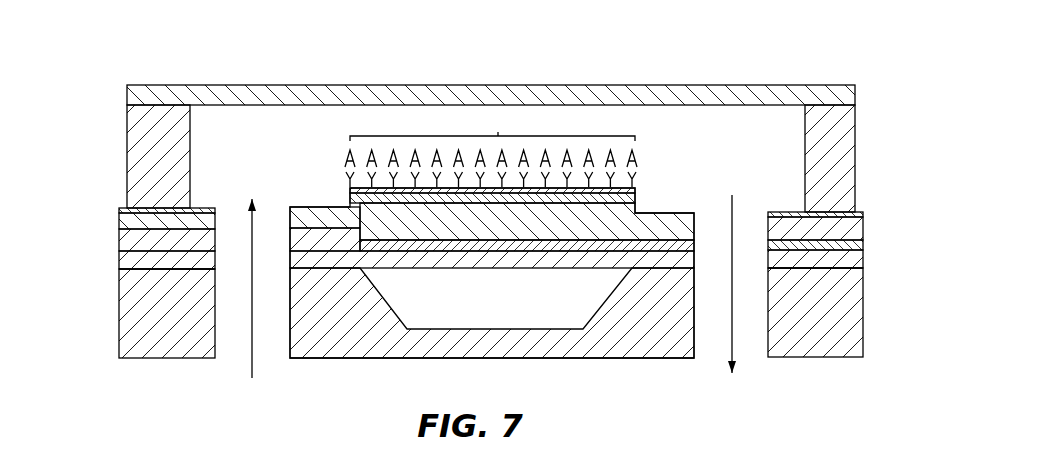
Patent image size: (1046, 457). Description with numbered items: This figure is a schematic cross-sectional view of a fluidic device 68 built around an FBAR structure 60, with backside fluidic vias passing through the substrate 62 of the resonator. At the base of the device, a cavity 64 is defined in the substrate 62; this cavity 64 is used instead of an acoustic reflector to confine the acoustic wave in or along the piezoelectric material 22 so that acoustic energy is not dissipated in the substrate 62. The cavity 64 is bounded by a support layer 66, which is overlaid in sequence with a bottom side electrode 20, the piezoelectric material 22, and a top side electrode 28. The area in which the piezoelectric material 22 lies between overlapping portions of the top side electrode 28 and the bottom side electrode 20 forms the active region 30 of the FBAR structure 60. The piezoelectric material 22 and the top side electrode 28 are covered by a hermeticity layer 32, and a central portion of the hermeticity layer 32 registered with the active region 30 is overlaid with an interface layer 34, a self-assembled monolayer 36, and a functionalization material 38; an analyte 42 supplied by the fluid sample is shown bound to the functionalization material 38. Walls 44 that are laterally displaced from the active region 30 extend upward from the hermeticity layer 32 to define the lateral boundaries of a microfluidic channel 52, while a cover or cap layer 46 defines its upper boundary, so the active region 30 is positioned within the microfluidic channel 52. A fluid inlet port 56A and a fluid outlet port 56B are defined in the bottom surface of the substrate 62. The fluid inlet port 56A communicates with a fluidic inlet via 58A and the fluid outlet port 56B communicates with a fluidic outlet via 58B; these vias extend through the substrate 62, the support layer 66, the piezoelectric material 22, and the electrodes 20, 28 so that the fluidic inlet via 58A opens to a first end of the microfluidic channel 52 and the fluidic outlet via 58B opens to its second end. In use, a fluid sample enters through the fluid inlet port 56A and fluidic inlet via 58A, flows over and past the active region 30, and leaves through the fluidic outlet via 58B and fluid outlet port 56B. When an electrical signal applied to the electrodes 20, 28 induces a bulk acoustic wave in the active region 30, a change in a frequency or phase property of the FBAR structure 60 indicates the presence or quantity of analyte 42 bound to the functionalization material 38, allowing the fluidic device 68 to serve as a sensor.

The fluidic device 68 is at (491, 111).
The cover or cap layer 46 is at (632, 85).
The walls 44 is at (857, 155).
The microfluidic channel 52 is at (297, 134).
The active region 30 is at (493, 146).
The analyte 42 is at (638, 156).
The functionalization material 38 is at (348, 182).
The self-assembled monolayer 36 is at (636, 189).
The interface layer 34 is at (635, 194).
The top side electrode 28 is at (121, 213).
The piezoelectric material 22 is at (121, 242).
The FBAR structure 60 is at (109, 273).
The fluidic inlet via 58A is at (228, 271).
The fluid inlet port 56A is at (232, 352).
The hermeticity layer 32 is at (863, 214).
The bottom side electrode 20 is at (863, 243).
The support layer 66 is at (863, 260).
The substrate 62 is at (863, 305).
The cavity 64 is at (512, 308).
The fluidic outlet via 58B is at (750, 282).
The fluid outlet port 56B is at (750, 355).